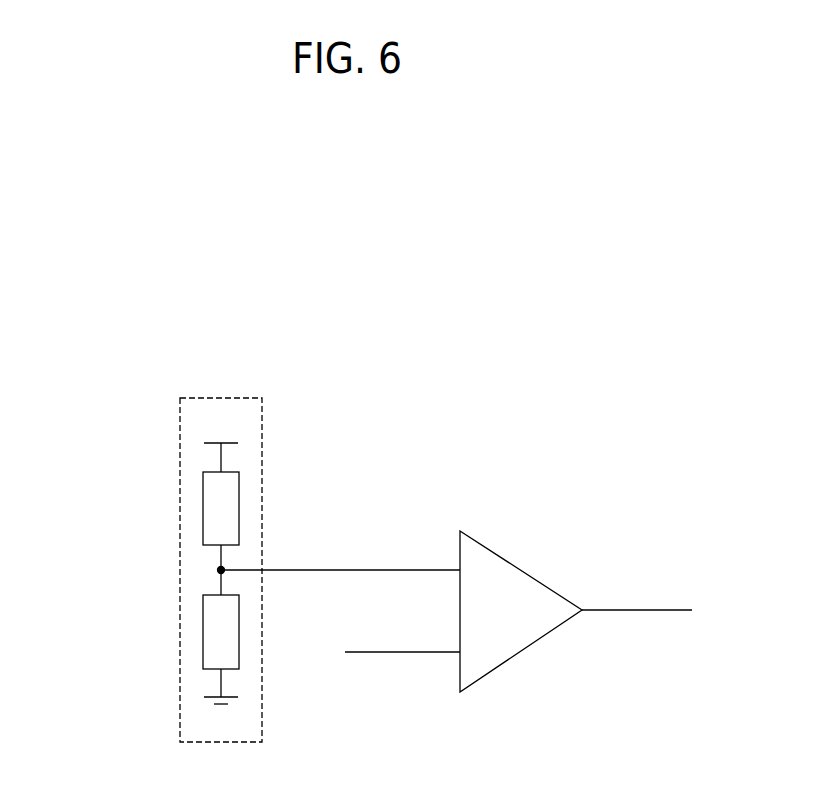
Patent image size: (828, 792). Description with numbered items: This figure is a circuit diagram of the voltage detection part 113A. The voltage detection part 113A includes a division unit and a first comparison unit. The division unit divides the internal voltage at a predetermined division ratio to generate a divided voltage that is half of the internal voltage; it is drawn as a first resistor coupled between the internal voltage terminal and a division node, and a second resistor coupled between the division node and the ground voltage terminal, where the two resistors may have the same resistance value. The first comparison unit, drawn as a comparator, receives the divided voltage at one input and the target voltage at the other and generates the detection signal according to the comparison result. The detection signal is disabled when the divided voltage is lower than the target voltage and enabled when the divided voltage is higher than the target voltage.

The voltage detection part 113A is at (122, 283).